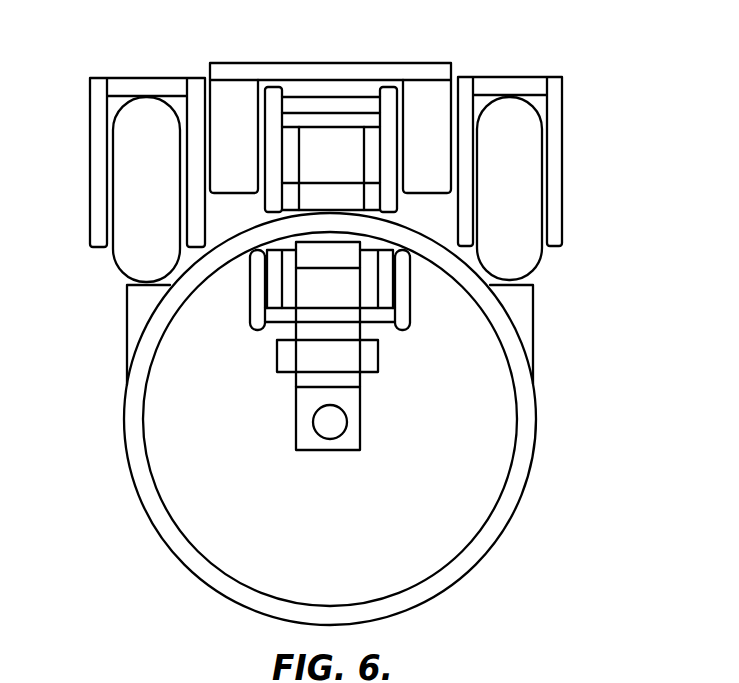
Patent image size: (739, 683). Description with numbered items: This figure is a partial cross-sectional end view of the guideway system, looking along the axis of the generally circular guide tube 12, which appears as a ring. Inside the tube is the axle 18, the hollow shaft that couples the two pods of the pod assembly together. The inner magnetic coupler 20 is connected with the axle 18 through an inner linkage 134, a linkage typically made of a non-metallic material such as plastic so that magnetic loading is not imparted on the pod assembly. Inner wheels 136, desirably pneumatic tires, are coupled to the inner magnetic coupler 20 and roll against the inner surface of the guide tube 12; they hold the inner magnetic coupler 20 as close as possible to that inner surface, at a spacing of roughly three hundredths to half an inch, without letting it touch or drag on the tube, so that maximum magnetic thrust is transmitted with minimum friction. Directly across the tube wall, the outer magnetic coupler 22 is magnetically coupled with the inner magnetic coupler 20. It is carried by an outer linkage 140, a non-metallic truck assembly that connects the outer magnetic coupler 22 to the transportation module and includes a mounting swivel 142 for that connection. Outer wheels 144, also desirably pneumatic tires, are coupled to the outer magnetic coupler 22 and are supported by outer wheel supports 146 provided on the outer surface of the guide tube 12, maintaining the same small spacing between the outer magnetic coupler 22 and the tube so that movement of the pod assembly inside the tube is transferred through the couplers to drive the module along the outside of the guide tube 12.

The guide tube 12 is at (254, 615).
The axle 18 is at (347, 427).
The inner magnetic coupler 20 is at (355, 270).
The outer magnetic coupler 22 is at (322, 185).
The inner linkage 134 is at (355, 330).
The inner wheels 136 is at (249, 296).
The outer linkage 140 is at (428, 115).
The mounting swivel 142 is at (412, 63).
The outer wheels 144 is at (122, 262).
The outer wheel supports 146 is at (137, 310).